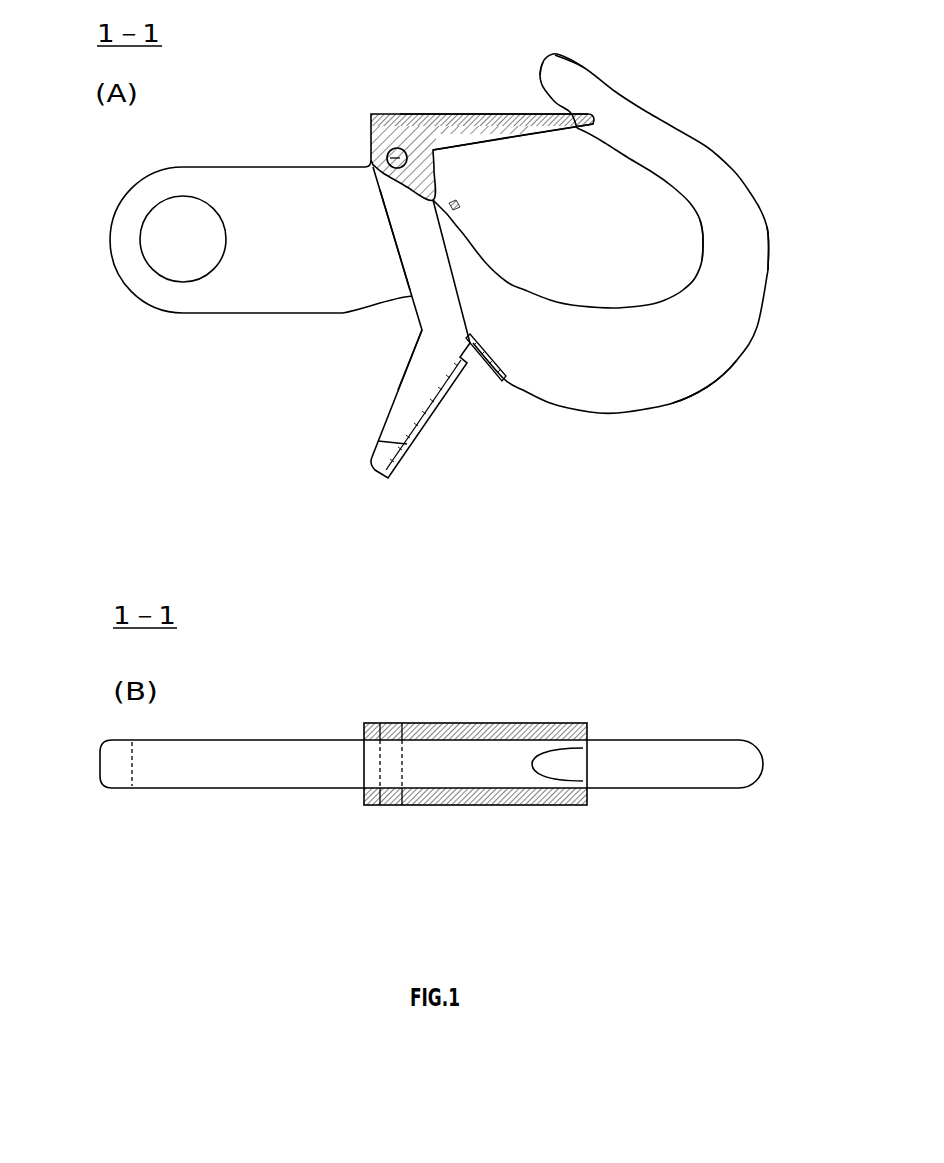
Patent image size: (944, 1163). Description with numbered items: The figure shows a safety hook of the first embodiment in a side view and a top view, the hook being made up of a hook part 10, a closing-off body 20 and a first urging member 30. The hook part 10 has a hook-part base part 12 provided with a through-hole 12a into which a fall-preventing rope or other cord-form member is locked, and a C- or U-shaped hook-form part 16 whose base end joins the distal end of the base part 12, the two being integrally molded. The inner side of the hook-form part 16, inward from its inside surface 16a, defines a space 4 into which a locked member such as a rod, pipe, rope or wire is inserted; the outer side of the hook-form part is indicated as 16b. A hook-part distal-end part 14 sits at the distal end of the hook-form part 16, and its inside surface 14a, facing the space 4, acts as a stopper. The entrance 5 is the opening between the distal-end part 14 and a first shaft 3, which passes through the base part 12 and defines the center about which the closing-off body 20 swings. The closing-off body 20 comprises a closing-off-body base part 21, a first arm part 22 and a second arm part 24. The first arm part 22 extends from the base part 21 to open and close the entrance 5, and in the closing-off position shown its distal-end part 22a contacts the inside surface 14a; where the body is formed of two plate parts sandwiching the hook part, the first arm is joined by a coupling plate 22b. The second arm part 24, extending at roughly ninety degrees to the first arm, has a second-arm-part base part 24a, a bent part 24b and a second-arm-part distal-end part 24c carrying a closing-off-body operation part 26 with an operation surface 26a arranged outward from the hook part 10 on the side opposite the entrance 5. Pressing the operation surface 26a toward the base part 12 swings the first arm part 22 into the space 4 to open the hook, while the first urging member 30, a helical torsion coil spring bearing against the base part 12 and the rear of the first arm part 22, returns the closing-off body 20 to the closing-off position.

The first shaft 3 is at (443, 190).
The space 4 is at (580, 205).
The entrance 5 is at (493, 96).
The hook part 10 is at (620, 395).
The hook-part base part 12 is at (273, 183).
The through-hole 12a is at (153, 237).
The hook-part distal-end part 14 is at (568, 88).
The inside surface 14a is at (545, 100).
The hook-form part 16 is at (690, 367).
The inside surface 16a is at (700, 225).
The outer surface of bowl 16b is at (770, 228).
The closing-off body 20 is at (502, 380).
The closing-off-body base part 21 is at (395, 147).
The first arm part 22 is at (512, 135).
The distal-end part 22a is at (550, 137).
The coupling plate 22b is at (438, 113).
The second arm part 24 is at (400, 212).
The second-arm-part base part 24a is at (413, 240).
The bent part 24b is at (428, 352).
The second-arm-part distal-end part 24c is at (422, 385).
The closing-off-body operation part 26 is at (378, 441).
The operation surface 26a is at (407, 460).
The first urging member 30 is at (440, 138).